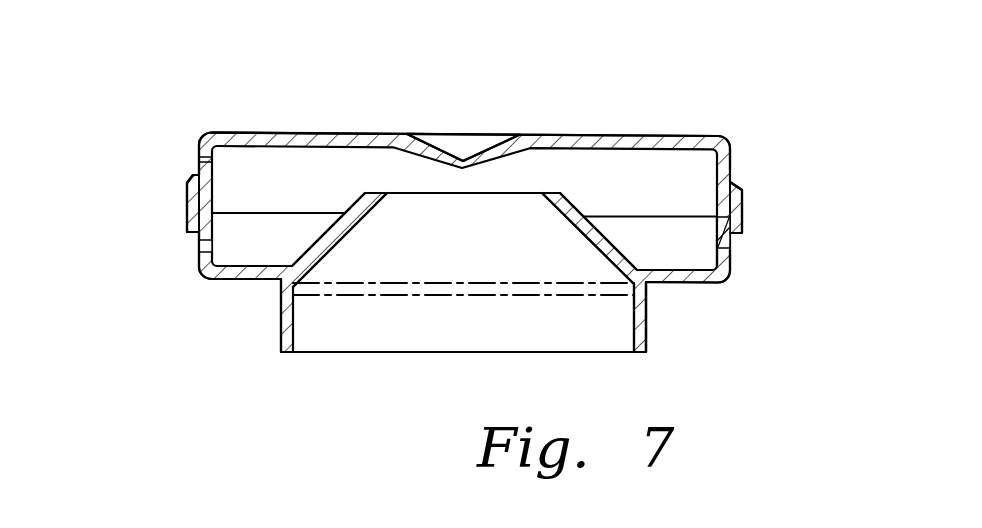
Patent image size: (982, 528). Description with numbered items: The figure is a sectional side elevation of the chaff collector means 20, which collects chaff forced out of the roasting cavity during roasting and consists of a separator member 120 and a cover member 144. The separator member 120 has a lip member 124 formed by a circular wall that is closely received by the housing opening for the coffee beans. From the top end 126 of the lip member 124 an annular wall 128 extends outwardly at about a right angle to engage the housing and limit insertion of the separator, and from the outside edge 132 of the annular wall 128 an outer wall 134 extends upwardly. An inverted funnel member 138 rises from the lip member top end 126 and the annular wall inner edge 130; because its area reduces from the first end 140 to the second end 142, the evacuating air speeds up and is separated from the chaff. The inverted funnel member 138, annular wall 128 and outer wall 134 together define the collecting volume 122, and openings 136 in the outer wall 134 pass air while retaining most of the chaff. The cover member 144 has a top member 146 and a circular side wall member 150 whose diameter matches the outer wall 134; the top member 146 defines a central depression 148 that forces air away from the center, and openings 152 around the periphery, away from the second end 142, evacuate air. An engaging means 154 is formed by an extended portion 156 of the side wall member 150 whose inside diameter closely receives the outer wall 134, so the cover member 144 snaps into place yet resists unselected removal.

The chaff collector means 20 is at (766, 129).
The separator member 120 is at (281, 323).
The collecting volume 122 is at (233, 238).
The lip member 124 is at (650, 328).
The top end of lip member 126 is at (633, 307).
The annular wall 128 is at (240, 280).
The annular wall inner edge 130 is at (636, 268).
The outside edge of annular wall 132 is at (712, 256).
The outer wall 134 is at (197, 237).
The openings 136 is at (730, 249).
The inverted funnel member 138 is at (333, 238).
The first end of inverted funnel member 140 is at (398, 290).
The second end of inverted funnel member 142 is at (528, 193).
The cover member 144 is at (722, 138).
The top member 146 is at (378, 138).
The depression 148 is at (470, 142).
The side wall member 150 is at (194, 182).
The openings 152 is at (200, 180).
The engaging means 154 is at (750, 195).
The extended portion 156 is at (744, 222).